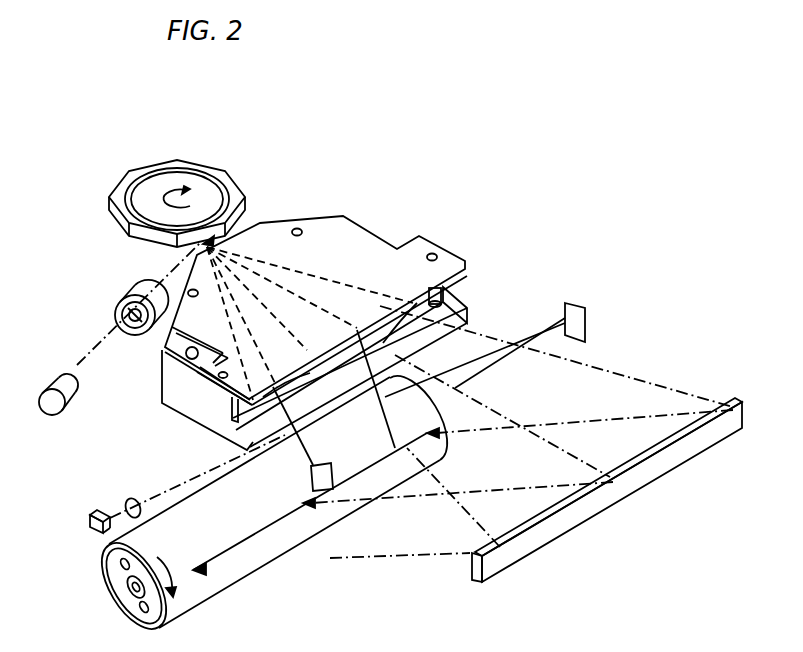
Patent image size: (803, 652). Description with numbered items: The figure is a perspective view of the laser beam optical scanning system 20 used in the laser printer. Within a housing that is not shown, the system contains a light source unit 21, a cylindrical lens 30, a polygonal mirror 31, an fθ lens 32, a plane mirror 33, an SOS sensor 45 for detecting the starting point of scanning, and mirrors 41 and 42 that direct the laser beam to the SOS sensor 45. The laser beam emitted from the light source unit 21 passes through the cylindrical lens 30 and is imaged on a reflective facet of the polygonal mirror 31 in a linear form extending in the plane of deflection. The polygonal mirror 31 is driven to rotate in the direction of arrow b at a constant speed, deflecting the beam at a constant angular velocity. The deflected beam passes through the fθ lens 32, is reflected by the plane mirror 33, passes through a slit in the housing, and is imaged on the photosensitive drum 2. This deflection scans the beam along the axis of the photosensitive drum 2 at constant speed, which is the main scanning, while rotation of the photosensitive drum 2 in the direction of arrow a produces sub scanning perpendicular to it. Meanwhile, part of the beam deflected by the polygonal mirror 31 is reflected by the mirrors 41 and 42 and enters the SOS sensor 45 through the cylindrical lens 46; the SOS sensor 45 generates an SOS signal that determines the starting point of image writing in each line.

The photosensitive drum 2 is at (223, 591).
The laser beam optical scanning system 20 is at (366, 132).
The light source unit 21 is at (50, 372).
The cylindrical lens 30 is at (130, 284).
The polygonal mirror 31 is at (189, 162).
The fθ lens 32 is at (382, 230).
The plane mirror 33 is at (627, 465).
The mirror 41 is at (310, 481).
The mirror 42 is at (575, 302).
The SOS sensor 45 is at (90, 512).
The cylindrical lens 46 is at (134, 498).